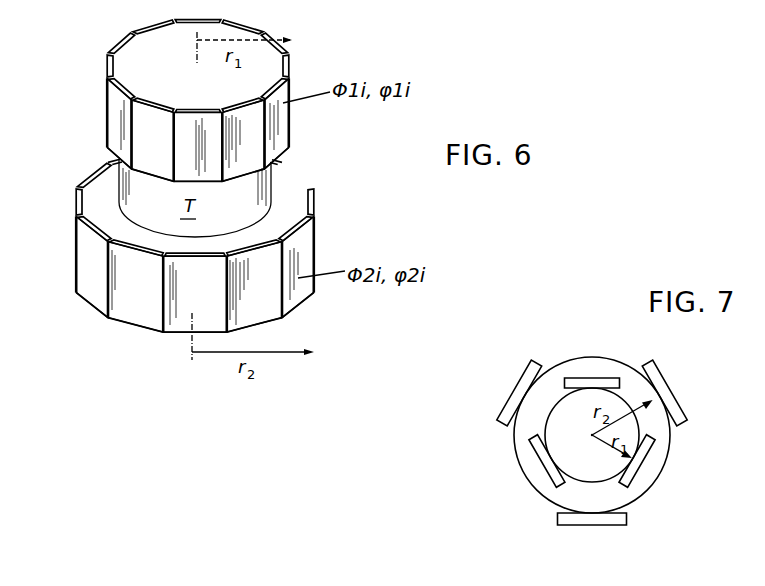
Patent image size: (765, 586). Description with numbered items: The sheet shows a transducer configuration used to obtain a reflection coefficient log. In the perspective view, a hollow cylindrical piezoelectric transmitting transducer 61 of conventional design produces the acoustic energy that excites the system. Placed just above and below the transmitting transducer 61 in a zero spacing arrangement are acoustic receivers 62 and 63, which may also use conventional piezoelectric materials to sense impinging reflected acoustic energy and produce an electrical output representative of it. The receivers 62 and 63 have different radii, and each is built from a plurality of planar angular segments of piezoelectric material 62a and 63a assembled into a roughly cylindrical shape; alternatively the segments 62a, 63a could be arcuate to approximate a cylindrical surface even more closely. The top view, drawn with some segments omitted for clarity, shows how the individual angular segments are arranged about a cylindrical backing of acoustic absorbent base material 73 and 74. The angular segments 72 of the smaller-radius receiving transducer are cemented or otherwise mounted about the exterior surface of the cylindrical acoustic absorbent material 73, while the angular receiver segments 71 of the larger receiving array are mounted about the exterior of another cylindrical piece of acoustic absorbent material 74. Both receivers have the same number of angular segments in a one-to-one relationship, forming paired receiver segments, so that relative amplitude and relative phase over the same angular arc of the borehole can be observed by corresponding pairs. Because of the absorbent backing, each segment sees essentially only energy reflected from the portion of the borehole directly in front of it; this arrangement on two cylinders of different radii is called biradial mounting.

In FIG. 6, the transmitting transducer 61 is at (255, 190).
In FIG. 6, the acoustic receiver 62 is at (145, 123).
In FIG. 6, the planar angular segments of piezoelectric material 62a is at (185, 153).
In FIG. 6, the acoustic receiver 63 is at (85, 270).
In FIG. 6, the planar angular segments of piezoelectric material 63a is at (173, 318).
In FIG. 7, the angular receiver segments 71 is at (673, 414).
In FIG. 7, the angular segments 72 is at (643, 453).
In FIG. 7, the acoustic absorbent base material 73 is at (558, 423).
In FIG. 7, the acoustic absorbent material 74 is at (613, 493).